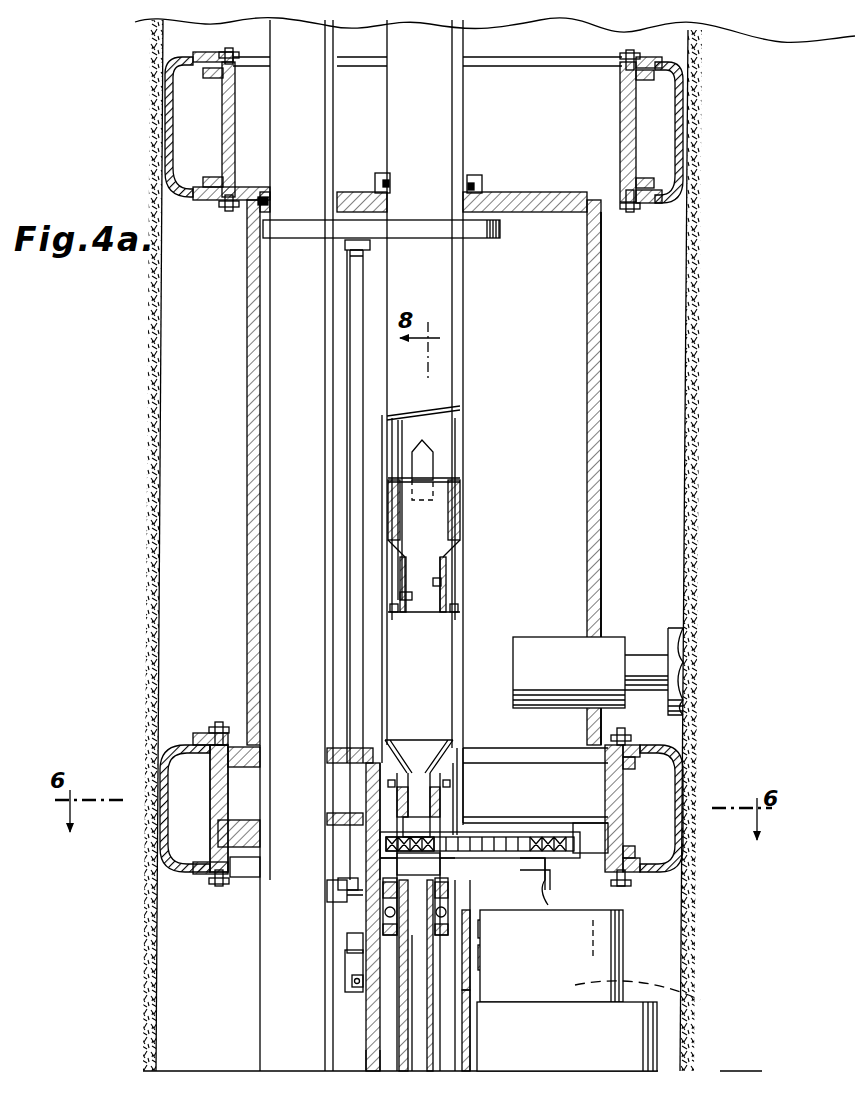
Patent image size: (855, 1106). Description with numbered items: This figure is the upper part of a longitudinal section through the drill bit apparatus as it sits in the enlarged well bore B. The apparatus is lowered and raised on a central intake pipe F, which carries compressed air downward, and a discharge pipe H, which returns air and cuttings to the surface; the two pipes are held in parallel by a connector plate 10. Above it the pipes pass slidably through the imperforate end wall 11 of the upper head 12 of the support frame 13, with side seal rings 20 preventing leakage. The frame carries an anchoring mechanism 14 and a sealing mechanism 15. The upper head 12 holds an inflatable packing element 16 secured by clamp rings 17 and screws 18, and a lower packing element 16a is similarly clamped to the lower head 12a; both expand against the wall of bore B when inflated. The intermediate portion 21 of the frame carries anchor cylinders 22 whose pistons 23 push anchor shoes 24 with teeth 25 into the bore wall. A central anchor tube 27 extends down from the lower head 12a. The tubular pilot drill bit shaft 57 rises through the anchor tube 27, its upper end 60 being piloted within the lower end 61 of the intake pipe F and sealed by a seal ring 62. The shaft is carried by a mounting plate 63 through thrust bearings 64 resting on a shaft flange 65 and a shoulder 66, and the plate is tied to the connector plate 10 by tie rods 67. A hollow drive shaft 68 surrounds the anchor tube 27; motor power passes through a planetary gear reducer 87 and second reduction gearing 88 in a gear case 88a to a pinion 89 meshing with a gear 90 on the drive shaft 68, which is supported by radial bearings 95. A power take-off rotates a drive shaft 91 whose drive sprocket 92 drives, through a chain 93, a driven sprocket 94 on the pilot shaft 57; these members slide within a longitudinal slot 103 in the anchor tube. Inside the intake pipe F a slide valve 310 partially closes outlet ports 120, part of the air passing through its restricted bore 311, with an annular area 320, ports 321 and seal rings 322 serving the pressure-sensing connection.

The connector plate 10 is at (482, 242).
The end wall 11 is at (540, 206).
The upper head 12 is at (626, 133).
The lower head 12a is at (222, 790).
The support frame 13 is at (608, 313).
The anchoring mechanism 14 is at (626, 635).
The sealing mechanism 15 is at (690, 78).
The inflatable packing element 16 is at (686, 132).
The lower inflatable packing element 16a is at (162, 776).
The clamp rings 17 is at (645, 62).
The screws 18 is at (224, 52).
The side seal rings 20 is at (340, 186).
The intermediate portion 21 is at (603, 521).
The anchor cylinders 22 is at (525, 645).
The piston 23 is at (627, 690).
The anchor shoe 24 is at (680, 652).
The teeth 25 is at (680, 692).
The central anchor tube 27 is at (372, 1071).
The pilot drill bit shaft 57 is at (440, 1060).
The upper end of pilot drill bit shaft 60 is at (432, 775).
The lower end of intake pipe 61 is at (400, 752).
The seal ring 62 is at (452, 787).
The mounting plate 63 is at (330, 898).
The thrust bearings 64 is at (435, 905).
The shaft flange 65 is at (350, 942).
The shoulder 66 is at (390, 862).
The tie rods 67 is at (355, 432).
The hollow drive shaft 68 is at (366, 1050).
The planetary gear reducer 87 is at (610, 1054).
The second reduction gearing 88 is at (704, 1001).
The gear case 88a is at (612, 950).
The pinion 89 is at (500, 960).
The gear 90 is at (382, 930).
The drive shaft 91 is at (545, 885).
The drive sprocket 92 is at (555, 845).
The chain 93 is at (490, 845).
The driven sprocket 94 is at (420, 850).
The radial bearings 95 is at (352, 982).
The longitudinal slot 103 is at (462, 1032).
The outlet ports 120 is at (385, 462).
The slide valve 310 is at (468, 528).
The restricted bore 311 is at (405, 597).
The annular area 320 is at (450, 566).
The ports 321 is at (442, 584).
The seal rings 322 is at (392, 548).
The enlarged well bore B is at (698, 382).
The central intake pipe F is at (435, 122).
The discharge pipe H is at (298, 116).